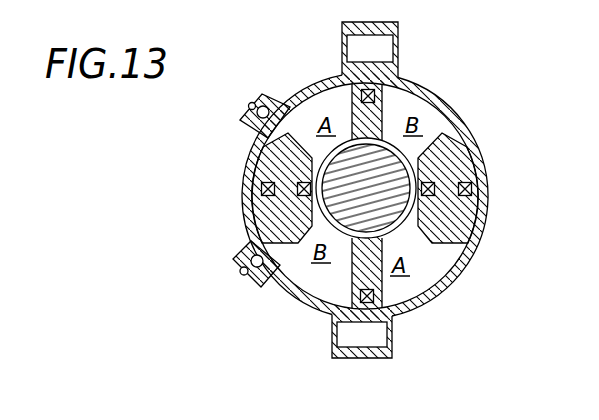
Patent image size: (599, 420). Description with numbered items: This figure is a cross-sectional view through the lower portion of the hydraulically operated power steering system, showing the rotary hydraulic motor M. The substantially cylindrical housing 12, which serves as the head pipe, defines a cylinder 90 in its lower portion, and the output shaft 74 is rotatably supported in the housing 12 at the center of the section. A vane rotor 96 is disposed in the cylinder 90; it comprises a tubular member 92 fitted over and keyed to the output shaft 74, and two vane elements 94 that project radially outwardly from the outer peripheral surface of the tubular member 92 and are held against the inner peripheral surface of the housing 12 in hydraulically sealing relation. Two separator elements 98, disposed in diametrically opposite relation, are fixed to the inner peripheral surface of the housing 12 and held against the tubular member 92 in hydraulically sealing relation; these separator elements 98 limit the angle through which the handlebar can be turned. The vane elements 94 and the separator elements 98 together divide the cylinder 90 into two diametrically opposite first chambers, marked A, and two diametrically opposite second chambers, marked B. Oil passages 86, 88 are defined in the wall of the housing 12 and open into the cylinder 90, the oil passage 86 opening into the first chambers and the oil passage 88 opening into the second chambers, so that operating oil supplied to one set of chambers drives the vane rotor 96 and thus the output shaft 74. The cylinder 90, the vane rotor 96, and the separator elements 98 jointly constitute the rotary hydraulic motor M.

The housing 12 is at (458, 117).
The output shaft 74 is at (398, 236).
The oil passage 86 is at (263, 94).
The oil passage 88 is at (254, 280).
The cylinder 90 is at (318, 290).
The tubular member 92 is at (343, 135).
The vane elements 94 is at (390, 107).
The vane rotor 96 is at (262, 222).
The separator elements 98 is at (268, 164).
The rotary hydraulic motor M is at (462, 85).